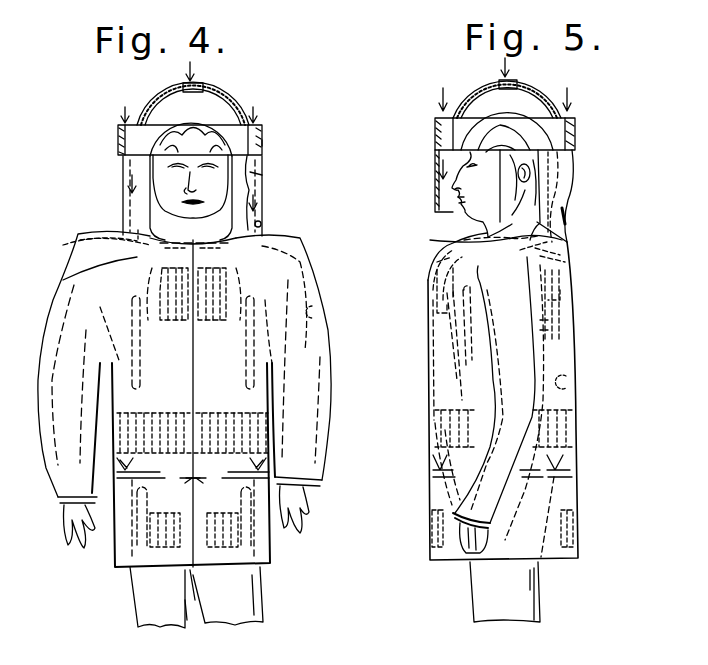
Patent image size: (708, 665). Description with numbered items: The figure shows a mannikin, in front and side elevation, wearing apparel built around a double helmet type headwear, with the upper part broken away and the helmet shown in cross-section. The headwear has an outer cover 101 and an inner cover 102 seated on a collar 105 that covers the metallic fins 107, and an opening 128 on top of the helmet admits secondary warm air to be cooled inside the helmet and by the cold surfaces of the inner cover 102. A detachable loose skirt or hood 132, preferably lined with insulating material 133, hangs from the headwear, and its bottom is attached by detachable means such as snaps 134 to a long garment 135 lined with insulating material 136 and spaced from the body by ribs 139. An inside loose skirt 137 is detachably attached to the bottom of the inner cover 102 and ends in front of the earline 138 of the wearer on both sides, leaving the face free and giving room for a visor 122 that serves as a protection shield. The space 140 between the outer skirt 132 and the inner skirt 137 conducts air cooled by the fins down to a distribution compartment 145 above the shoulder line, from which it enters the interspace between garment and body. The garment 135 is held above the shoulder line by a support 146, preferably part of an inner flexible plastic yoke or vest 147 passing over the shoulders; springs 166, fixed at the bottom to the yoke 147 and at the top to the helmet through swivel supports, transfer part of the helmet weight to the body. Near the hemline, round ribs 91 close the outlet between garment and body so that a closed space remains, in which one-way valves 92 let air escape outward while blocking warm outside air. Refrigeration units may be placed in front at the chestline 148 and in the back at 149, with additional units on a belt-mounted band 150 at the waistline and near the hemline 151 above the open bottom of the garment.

In FIG. 4, the round ribs 91 is at (246, 464).
In FIG. 5, the round ribs 91 is at (432, 468).
In FIG. 4, the one-way valves 92 is at (200, 491).
In FIG. 4, the outer cover 101 is at (218, 97).
In FIG. 4, the inner cover 102 is at (237, 108).
In FIG. 4, the collar 105 is at (262, 128).
In FIG. 5, the collar 105 is at (578, 136).
In FIG. 4, the metallic fins 107 is at (263, 142).
In FIG. 4, the visor 122 is at (160, 190).
In FIG. 5, the visor 122 is at (435, 178).
In FIG. 4, the opening 128 is at (209, 75).
In FIG. 5, the opening 128 is at (520, 62).
In FIG. 4, the outer skirt 132 is at (263, 158).
In FIG. 5, the outer skirt 132 is at (578, 174).
In FIG. 4, the insulating material 133 is at (262, 200).
In FIG. 4, the snaps 134 is at (306, 240).
In FIG. 4, the long garment 135 is at (276, 280).
In FIG. 5, the long garment 135 is at (445, 378).
In FIG. 4, the insulating material 136 is at (332, 308).
In FIG. 5, the insulating material 136 is at (574, 380).
In FIG. 4, the inside skirt 137 is at (264, 220).
In FIG. 5, the inside skirt 137 is at (568, 216).
In FIG. 5, the earline 138 is at (487, 213).
In FIG. 4, the ribs 139 is at (140, 355).
In FIG. 5, the ribs 139 is at (463, 327).
In FIG. 4, the space 140 is at (126, 206).
In FIG. 4, the distribution compartment 145 is at (128, 225).
In FIG. 5, the distribution compartment 145 is at (568, 240).
In FIG. 4, the support 146 is at (130, 240).
In FIG. 5, the support 146 is at (570, 258).
In FIG. 4, the yoke 147 is at (110, 268).
In FIG. 5, the yoke 147 is at (548, 286).
In FIG. 4, the chestline 148 is at (200, 322).
In FIG. 5, the chestline 148 is at (436, 280).
In FIG. 5, the back location 149 is at (562, 297).
In FIG. 4, the band 150 is at (240, 420).
In FIG. 5, the band 150 is at (442, 425).
In FIG. 5, the hemline 151 is at (573, 530).
In FIG. 4, the springs 166 is at (263, 174).